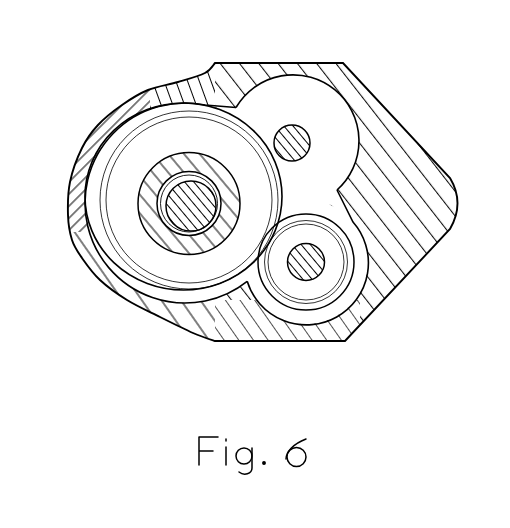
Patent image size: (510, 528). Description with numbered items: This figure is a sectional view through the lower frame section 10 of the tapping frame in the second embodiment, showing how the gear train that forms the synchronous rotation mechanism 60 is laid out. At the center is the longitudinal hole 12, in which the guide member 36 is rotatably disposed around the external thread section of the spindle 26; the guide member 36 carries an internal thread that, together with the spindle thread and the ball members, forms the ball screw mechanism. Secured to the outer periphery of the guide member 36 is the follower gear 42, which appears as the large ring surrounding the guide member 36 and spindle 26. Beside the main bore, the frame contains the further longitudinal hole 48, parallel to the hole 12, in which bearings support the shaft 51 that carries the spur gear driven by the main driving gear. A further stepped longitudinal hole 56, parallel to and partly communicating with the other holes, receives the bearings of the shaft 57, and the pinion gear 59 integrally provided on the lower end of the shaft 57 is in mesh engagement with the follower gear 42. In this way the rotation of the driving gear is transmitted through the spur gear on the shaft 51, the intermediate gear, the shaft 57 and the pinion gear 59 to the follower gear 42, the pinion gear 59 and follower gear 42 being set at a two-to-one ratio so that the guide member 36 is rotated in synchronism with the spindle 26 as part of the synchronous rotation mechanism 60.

The lower frame section 10 is at (417, 137).
The longitudinal hole 12 is at (149, 104).
The spindle 26 is at (175, 211).
The guide member 36 is at (156, 242).
The follower gear 42 is at (198, 291).
The longitudinal hole 48 is at (319, 84).
The shaft 51 is at (308, 138).
The longitudinal hole 56 is at (372, 272).
The shaft 57 is at (311, 244).
The pinion gear 59 is at (332, 287).
The synchronous rotation mechanism 60 is at (314, 346).